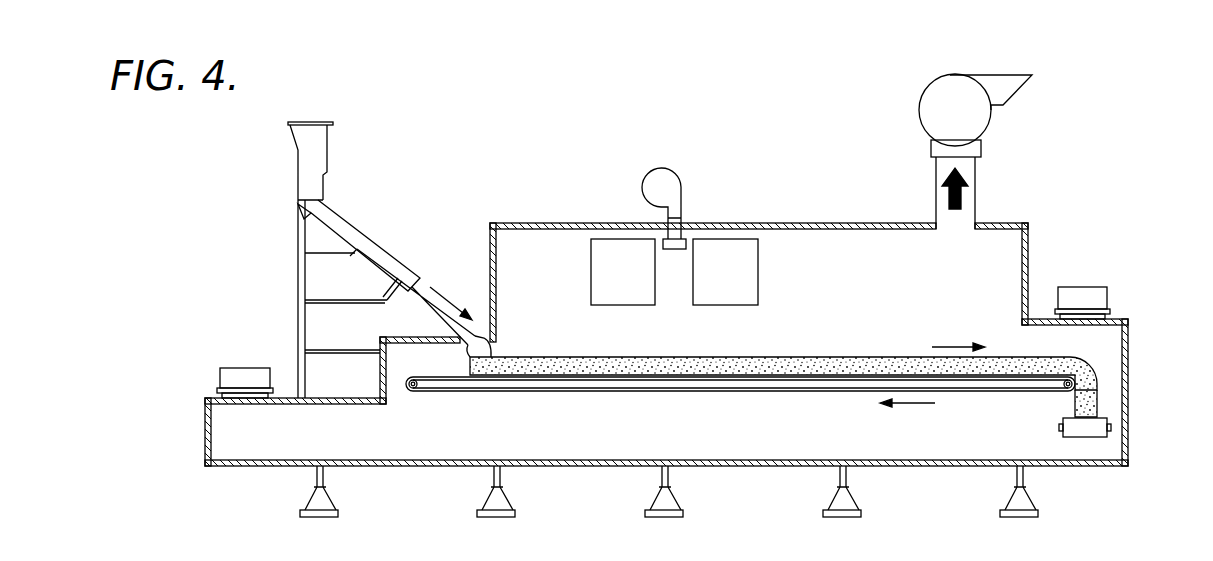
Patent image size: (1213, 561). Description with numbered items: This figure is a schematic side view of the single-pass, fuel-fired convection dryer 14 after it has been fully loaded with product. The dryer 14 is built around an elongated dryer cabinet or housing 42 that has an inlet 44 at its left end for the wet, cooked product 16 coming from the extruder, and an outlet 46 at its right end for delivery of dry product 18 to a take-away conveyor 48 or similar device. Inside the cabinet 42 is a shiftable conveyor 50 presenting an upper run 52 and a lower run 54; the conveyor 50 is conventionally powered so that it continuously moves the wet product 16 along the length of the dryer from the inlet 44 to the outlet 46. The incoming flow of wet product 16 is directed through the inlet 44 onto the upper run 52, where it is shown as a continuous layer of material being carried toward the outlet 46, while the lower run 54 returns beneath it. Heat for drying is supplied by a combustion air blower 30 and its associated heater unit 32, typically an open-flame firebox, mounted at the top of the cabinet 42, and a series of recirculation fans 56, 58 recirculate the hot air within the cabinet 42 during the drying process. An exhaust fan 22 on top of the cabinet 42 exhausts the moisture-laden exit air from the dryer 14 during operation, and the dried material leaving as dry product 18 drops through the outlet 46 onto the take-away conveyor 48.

The dryer 14 is at (1050, 170).
The wet product 16 is at (533, 362).
The dry product 18 is at (1085, 400).
The exhaust fan 22 is at (942, 98).
The combustion air blower 30 is at (660, 175).
The heater unit 32 is at (674, 251).
The dryer cabinet 42 is at (1029, 250).
The inlet 44 is at (467, 298).
The outlet 46 is at (1106, 360).
The take-away conveyor 48 is at (1083, 430).
The shiftable conveyor 50 is at (584, 404).
The upper run 52 is at (840, 375).
The lower run 54 is at (830, 391).
The recirculation fan 56 is at (598, 272).
The recirculation fan 58 is at (752, 269).